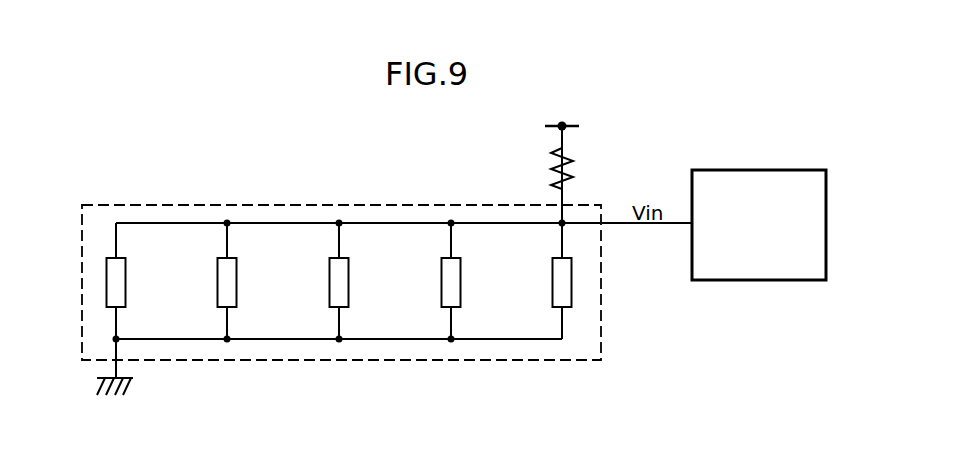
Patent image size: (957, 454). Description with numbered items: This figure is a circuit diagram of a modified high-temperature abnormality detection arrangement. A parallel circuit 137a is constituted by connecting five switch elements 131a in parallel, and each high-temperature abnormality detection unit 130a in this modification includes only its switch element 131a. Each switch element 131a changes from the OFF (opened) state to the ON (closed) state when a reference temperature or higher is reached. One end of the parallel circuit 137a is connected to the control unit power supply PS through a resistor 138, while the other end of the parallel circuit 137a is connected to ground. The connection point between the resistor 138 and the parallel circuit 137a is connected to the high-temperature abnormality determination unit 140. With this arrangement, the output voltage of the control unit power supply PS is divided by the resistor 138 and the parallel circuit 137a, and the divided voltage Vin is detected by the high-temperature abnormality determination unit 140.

The switch element 131a is at (393, 286).
The high-temperature abnormality detection unit 130a is at (620, 282).
The parallel circuit 137a is at (458, 204).
The resistor 138 is at (576, 165).
The high-temperature abnormality determination unit 140 is at (778, 170).
The control unit power supply PS is at (572, 122).